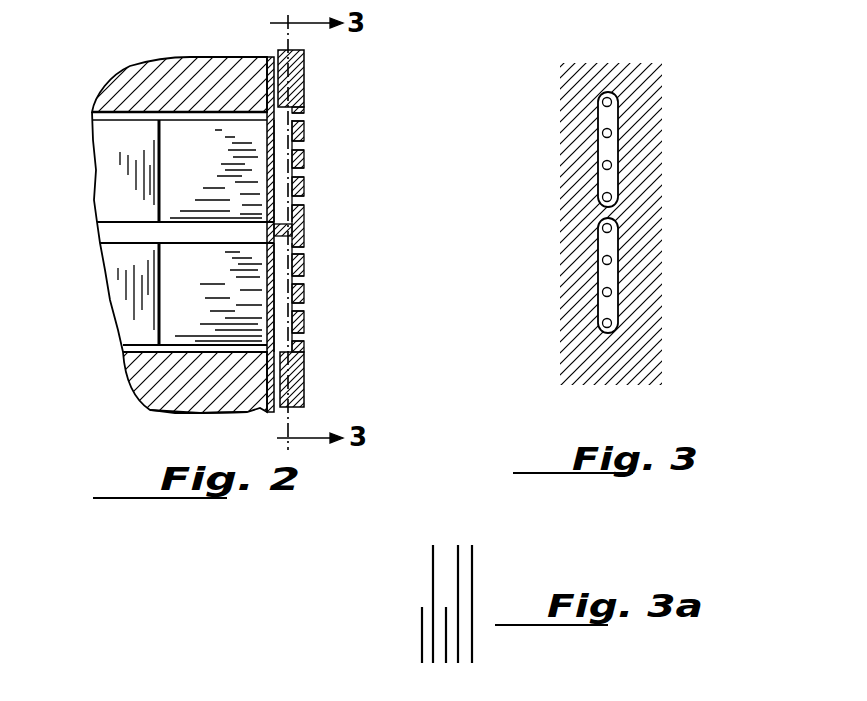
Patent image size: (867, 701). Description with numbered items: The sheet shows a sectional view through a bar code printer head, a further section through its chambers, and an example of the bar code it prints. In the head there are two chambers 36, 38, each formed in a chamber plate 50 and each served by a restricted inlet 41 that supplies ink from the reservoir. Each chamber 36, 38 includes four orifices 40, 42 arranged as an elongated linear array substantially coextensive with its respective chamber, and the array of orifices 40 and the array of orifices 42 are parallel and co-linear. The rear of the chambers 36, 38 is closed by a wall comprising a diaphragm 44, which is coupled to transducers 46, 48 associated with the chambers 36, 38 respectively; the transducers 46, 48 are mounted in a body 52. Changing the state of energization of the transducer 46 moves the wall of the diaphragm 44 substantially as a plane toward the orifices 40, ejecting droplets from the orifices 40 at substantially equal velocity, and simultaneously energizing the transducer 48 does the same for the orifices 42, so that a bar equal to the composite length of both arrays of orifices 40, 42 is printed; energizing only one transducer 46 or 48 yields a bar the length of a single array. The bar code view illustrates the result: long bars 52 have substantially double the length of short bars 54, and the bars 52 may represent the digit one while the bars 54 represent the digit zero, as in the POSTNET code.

In FIG. 2, the chamber 36 is at (283, 157).
In FIG. 3, the chamber 36 is at (618, 120).
In FIG. 2, the chamber 38 is at (283, 297).
In FIG. 3, the chamber 38 is at (618, 272).
In FIG. 2, the orifices 40 is at (305, 201).
In FIG. 3, the orifices 40 is at (598, 197).
In FIG. 2, the restricted inlet 41 is at (274, 57).
In FIG. 2, the orifices 42 is at (305, 338).
In FIG. 3, the orifices 42 is at (600, 322).
In FIG. 2, the diaphragm 44 is at (203, 411).
In FIG. 2, the transducer 46 is at (118, 176).
In FIG. 2, the transducer 48 is at (122, 287).
In FIG. 2, the chamber plate 50 is at (298, 68).
In FIG. 3, the chamber plate 50 is at (633, 345).
In FIG. 2, the body 52 is at (160, 387).
In FIG. 3A, the body 52 is at (471, 548).
In FIG. 3A, the bars 54 is at (422, 635).